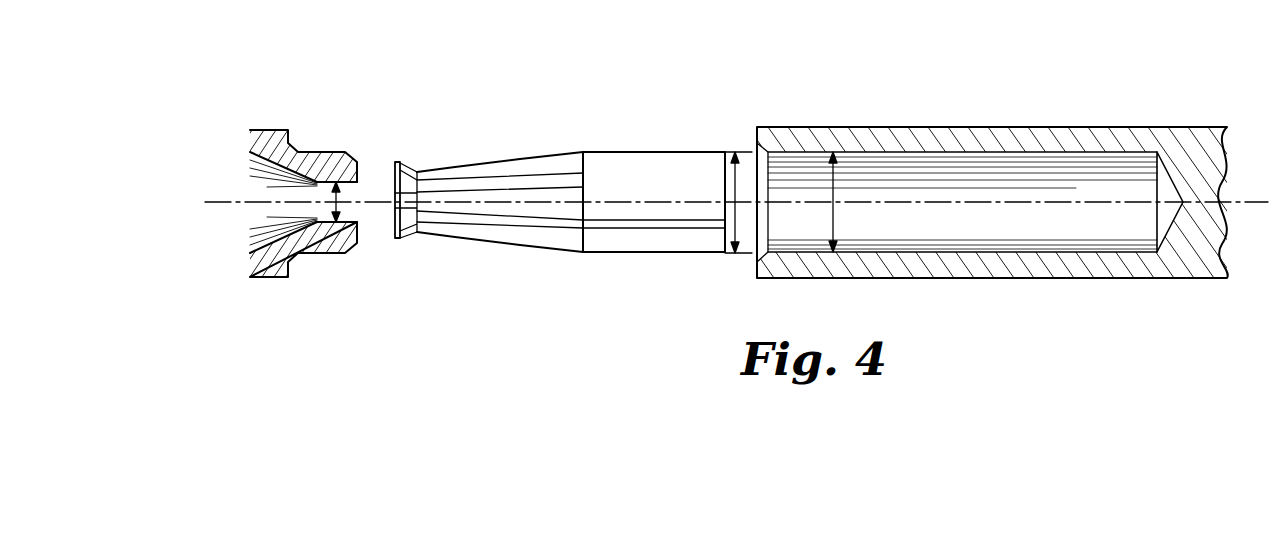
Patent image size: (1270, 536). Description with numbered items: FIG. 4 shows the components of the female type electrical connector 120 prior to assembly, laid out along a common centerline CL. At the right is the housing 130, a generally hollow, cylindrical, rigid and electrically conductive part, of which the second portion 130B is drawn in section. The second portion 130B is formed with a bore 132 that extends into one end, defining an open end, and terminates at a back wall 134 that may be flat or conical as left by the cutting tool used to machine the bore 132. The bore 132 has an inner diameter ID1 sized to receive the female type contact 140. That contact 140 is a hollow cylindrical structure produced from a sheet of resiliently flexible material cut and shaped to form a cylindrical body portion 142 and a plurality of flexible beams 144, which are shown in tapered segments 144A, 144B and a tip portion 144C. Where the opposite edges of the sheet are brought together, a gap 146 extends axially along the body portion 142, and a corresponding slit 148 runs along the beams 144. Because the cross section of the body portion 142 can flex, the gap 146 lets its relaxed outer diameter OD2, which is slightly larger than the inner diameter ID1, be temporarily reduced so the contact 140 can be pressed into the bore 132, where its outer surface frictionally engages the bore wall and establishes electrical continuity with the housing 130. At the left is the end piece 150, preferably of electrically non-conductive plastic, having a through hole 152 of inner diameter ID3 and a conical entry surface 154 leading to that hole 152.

The female type electrical connector 120 is at (616, 48).
The housing 130 is at (972, 120).
The second portion of the housing 130B is at (868, 142).
The bore 132 is at (910, 156).
The back wall 134 is at (1170, 182).
The female type contact 140 is at (637, 88).
The body portion 142 is at (660, 178).
The flexible beams 144 is at (457, 166).
The flexible beam portion 144A is at (561, 163).
The flexible beam portion 144B is at (491, 167).
The tip portion 144C is at (406, 162).
The gap 146 is at (646, 223).
The slot in tapered portion 148 is at (442, 185).
The end piece 150 is at (272, 134).
The through hole 152 is at (348, 183).
The nut conical surface 154 is at (250, 156).
The centerline CL is at (217, 208).
The inner diameter of the bore ID1 is at (836, 222).
The nut bore inner diameter ID3 is at (352, 211).
The outer diameter of the body portion OD2 is at (737, 221).